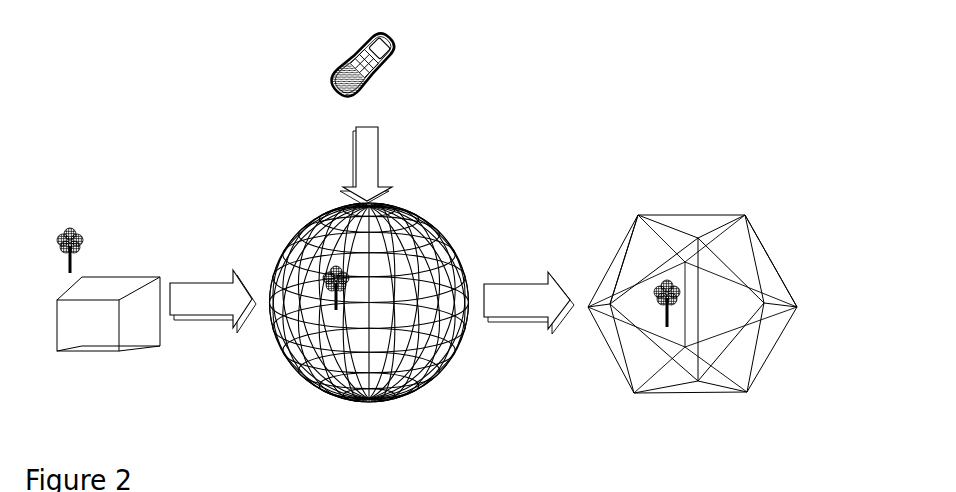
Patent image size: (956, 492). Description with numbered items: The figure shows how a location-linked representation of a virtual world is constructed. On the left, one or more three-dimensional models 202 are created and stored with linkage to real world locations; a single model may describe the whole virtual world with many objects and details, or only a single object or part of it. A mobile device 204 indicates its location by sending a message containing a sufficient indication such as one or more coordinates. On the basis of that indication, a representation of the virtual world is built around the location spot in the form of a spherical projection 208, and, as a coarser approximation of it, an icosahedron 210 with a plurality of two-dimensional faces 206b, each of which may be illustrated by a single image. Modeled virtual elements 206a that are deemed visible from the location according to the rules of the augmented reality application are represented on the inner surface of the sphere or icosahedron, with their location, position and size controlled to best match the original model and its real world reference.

The 3D model 202 is at (112, 310).
The mobile device 204 is at (398, 50).
The modeled virtual element 206a is at (662, 287).
The 2D face 206b is at (772, 263).
The spherical projection 208 is at (369, 302).
The icosahedron 210 is at (692, 321).